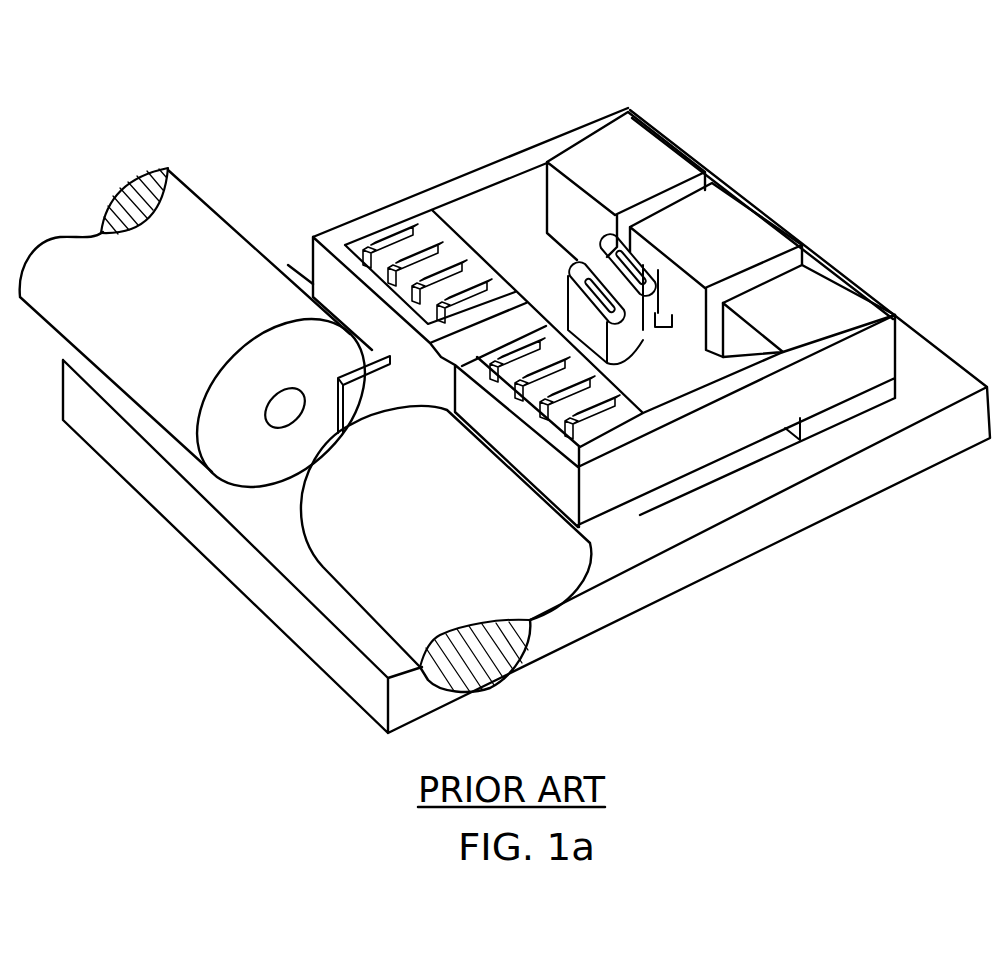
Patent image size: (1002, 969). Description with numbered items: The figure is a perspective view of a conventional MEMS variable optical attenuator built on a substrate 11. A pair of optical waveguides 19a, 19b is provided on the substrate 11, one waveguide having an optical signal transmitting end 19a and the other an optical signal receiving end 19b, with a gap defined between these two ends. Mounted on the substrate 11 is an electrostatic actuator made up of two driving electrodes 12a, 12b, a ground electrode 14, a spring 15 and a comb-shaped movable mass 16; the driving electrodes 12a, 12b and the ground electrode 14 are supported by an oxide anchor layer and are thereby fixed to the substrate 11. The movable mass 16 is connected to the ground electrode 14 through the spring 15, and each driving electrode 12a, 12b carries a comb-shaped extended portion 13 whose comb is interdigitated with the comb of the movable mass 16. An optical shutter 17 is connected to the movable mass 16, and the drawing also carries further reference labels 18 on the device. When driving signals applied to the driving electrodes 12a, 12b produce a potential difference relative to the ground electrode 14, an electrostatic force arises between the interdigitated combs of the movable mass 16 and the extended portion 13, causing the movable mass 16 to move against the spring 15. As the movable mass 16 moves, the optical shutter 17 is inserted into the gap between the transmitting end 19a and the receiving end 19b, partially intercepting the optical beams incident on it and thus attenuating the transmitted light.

The substrate 11 is at (897, 475).
The driving electrode 12a is at (820, 297).
The driving electrode 12b is at (640, 158).
The extended portion 13 is at (543, 430).
The ground electrode 14 is at (732, 220).
The spring 15 is at (630, 340).
The movable mass 16 is at (437, 238).
The optical shutter 17 is at (355, 398).
The terminal tab 18 is at (553, 233).
The optical waveguide 19a is at (357, 588).
The optical waveguide 19b is at (137, 400).